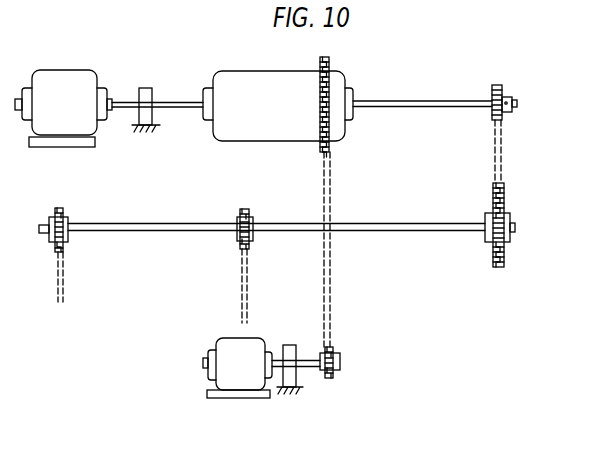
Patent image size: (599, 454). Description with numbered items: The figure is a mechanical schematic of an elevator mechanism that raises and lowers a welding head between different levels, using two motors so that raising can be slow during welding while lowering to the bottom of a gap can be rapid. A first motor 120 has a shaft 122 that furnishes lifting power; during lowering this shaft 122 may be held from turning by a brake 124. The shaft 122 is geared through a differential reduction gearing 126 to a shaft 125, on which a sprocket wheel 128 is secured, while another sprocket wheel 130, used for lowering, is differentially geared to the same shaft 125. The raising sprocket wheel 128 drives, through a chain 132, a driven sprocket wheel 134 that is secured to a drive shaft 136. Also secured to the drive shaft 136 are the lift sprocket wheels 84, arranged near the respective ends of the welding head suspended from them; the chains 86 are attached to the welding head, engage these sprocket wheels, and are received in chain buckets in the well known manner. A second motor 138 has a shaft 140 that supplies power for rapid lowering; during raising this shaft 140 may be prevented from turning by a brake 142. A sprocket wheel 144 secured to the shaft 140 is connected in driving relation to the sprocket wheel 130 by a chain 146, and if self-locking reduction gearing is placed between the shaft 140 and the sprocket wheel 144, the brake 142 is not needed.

The first motor 120 is at (72, 80).
The shaft 122 is at (122, 100).
The brake 124 is at (147, 90).
The differential reduction gearing 126 is at (273, 78).
The sprocket wheel 130 is at (329, 62).
The shaft 125 is at (397, 100).
The sprocket wheel 128 is at (497, 85).
The chain 132 is at (502, 155).
The driven sprocket wheel 134 is at (502, 203).
The drive shaft 136 is at (437, 222).
The lift sprocket wheels 84 is at (60, 208).
The chains 86 is at (63, 277).
The chain 146 is at (328, 273).
The second motor 138 is at (222, 348).
The shaft 140 is at (277, 355).
The brake 142 is at (293, 378).
The sprocket wheel 144 is at (333, 377).